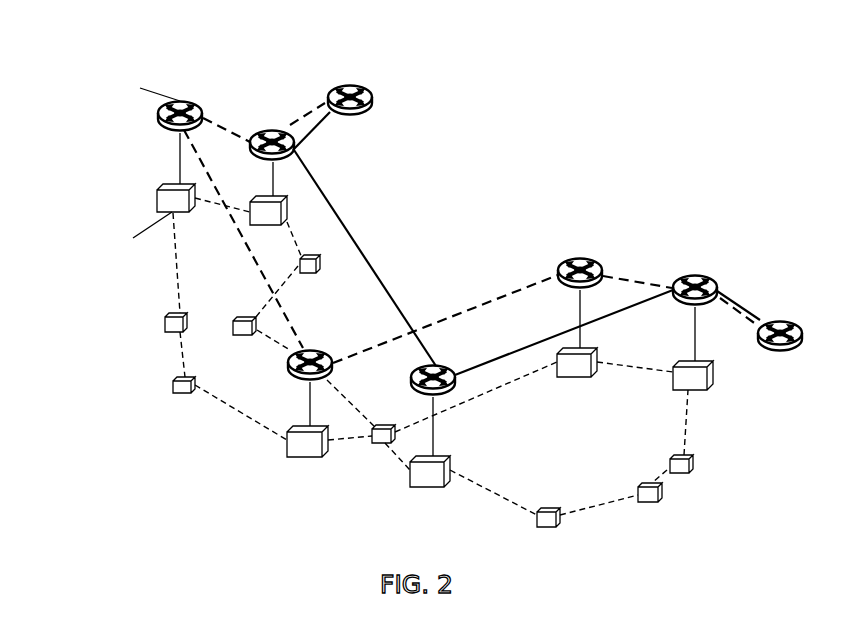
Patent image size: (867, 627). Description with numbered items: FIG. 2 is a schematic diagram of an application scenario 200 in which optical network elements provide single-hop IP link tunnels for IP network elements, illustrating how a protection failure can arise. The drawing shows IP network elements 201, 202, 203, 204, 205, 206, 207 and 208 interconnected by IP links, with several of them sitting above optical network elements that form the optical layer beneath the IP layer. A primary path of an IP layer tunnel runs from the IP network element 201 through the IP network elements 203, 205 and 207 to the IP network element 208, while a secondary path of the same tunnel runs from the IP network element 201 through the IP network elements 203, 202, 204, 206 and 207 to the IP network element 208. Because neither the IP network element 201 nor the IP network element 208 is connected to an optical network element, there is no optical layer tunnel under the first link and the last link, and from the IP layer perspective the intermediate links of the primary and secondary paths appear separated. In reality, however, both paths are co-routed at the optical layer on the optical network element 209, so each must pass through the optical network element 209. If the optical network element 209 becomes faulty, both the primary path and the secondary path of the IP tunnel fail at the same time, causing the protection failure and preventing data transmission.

The network 200 is at (79, 40).
The IP network element 201 is at (356, 121).
The IP network element 202 is at (166, 157).
The IP network element 203 is at (272, 162).
The IP network element 204 is at (323, 388).
The IP network element 205 is at (445, 410).
The IP network element 206 is at (579, 300).
The IP network element 207 is at (695, 315).
The IP network element 208 is at (786, 319).
The optical network element 209 is at (370, 451).